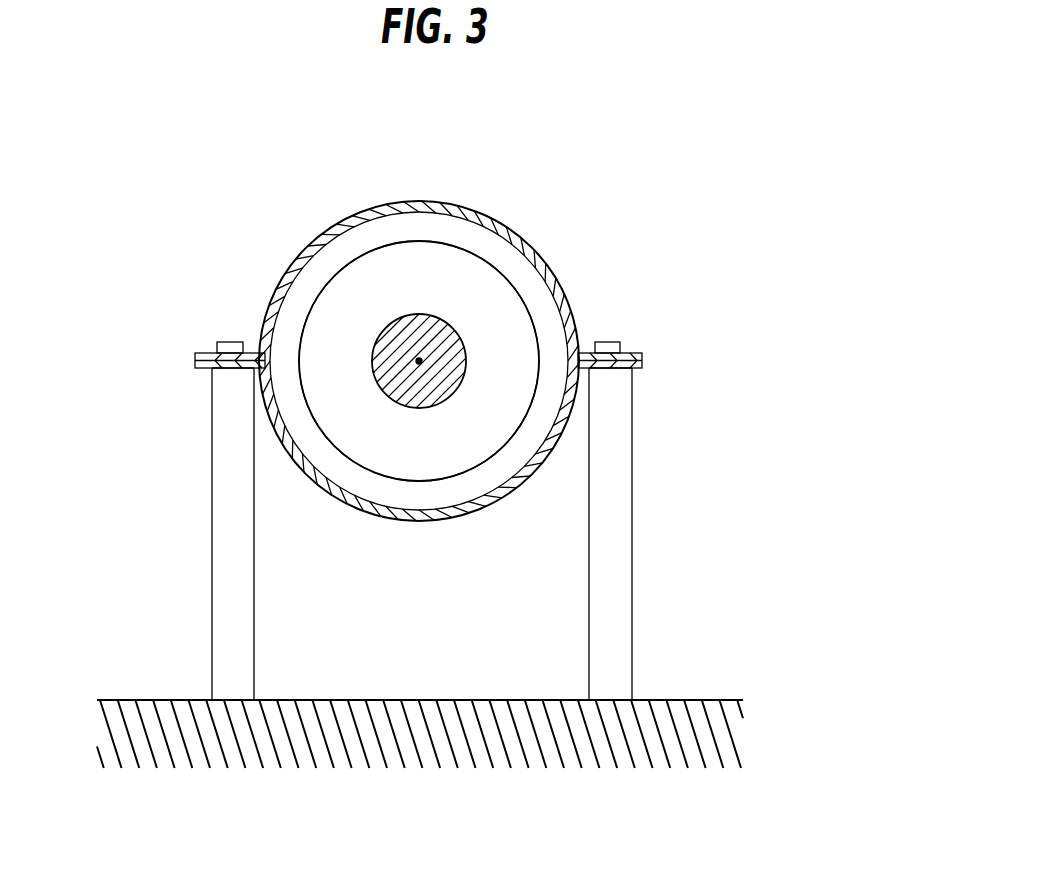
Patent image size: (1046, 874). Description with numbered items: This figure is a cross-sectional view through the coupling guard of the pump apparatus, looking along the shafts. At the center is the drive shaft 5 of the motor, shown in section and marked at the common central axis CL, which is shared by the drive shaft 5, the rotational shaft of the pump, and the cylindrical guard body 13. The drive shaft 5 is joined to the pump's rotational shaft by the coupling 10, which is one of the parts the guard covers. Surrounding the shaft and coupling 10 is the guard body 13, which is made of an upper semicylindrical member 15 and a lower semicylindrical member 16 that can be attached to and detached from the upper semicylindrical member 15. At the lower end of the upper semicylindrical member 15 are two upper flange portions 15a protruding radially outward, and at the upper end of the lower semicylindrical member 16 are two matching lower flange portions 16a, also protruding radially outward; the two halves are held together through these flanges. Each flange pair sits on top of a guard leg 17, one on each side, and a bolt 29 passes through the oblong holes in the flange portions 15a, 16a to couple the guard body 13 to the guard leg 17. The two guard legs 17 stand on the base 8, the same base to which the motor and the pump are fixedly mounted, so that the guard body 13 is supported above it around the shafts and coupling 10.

The drive shaft 5 is at (409, 313).
The base 8 is at (677, 700).
The coupling 10 is at (399, 481).
The guard body 13 is at (465, 200).
The upper semicylindrical member 15 is at (520, 218).
The upper flange portion 15a is at (207, 352).
The lower semicylindrical member 16 is at (462, 520).
The lower flange portion 16a is at (220, 370).
The guard leg 17 is at (212, 572).
The bolt 29 is at (233, 342).
The central axis CL is at (417, 363).